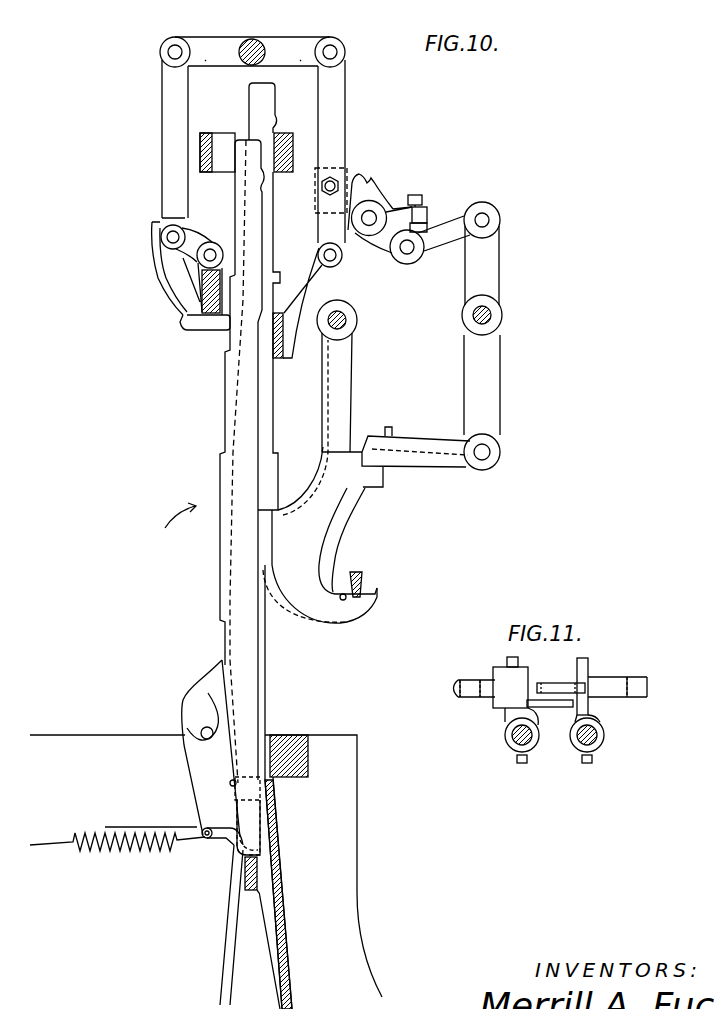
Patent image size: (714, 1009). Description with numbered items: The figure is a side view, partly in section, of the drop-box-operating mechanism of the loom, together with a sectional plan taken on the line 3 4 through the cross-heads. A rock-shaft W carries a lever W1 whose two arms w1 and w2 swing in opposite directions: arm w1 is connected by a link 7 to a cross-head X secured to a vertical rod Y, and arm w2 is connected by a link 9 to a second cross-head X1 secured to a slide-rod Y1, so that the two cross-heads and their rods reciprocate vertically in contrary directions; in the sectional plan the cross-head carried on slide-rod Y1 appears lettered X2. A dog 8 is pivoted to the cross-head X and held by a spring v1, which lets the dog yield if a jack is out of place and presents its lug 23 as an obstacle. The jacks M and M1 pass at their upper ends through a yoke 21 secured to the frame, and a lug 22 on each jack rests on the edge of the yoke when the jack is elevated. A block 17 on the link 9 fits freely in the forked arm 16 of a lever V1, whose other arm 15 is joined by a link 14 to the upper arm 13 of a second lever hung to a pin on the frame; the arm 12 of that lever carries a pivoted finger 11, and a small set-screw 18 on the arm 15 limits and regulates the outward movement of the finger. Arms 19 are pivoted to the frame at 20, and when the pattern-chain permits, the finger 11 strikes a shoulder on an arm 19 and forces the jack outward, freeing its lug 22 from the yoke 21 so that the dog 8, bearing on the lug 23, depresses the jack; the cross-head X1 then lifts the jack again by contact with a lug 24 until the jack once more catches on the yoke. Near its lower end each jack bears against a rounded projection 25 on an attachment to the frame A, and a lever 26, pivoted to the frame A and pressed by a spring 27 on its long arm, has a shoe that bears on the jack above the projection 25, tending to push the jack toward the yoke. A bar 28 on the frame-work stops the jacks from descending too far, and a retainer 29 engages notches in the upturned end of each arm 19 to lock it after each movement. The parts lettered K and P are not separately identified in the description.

In FIG. 10, the lever W1 is at (312, 32).
In FIG. 10, the arm of lever w1 is at (208, 52).
In FIG. 10, the arm of lever w2 is at (300, 52).
In FIG. 10, the rock-shaft W is at (250, 65).
In FIG. 10, the link 7 is at (163, 135).
In FIG. 10, the link 9 is at (345, 135).
In FIG. 10, the block 17 is at (345, 173).
In FIG. 10, the yoke 21 is at (212, 133).
In FIG. 10, the lug 22 is at (275, 125).
In FIG. 10, the jack M1 is at (268, 428).
In FIG. 11, the jack M1 is at (555, 683).
In FIG. 10, the lug 24 is at (280, 276).
In FIG. 10, the cross-head X1 is at (306, 300).
In FIG. 10, the lug 23 is at (226, 353).
In FIG. 10, the jack M is at (232, 428).
In FIG. 11, the jack M is at (548, 707).
In FIG. 10, the bar 28 is at (245, 871).
In FIG. 10, the plate K is at (276, 895).
In FIG. 10, the rounded projection 25 is at (323, 866).
In FIG. 10, the frame A is at (107, 763).
In FIG. 10, the lever 26 is at (210, 752).
In FIG. 10, the plunger P is at (226, 927).
In FIG. 10, the spring 27 is at (117, 849).
In FIG. 10, the pivot 20 is at (346, 318).
In FIG. 10, the finger 11 is at (432, 460).
In FIG. 10, the arm of lever 12 is at (482, 365).
In FIG. 10, the upper arm of lever 13 is at (482, 253).
In FIG. 10, the link 14 is at (447, 245).
In FIG. 10, the arm of lever 15 is at (383, 260).
In FIG. 10, the forked arm 16 is at (364, 190).
In FIG. 10, the lever V1 is at (377, 170).
In FIG. 10, the set-screw 18 is at (422, 199).
In FIG. 10, the section-line point 3 is at (162, 205).
In FIG. 10, the section-line point 4 is at (505, 203).
In FIG. 10, the cross-head X is at (183, 229).
In FIG. 11, the cross-head X is at (491, 682).
In FIG. 10, the dog 8 is at (205, 330).
In FIG. 10, the spring v1 is at (166, 296).
In FIG. 10, the arm 19 is at (320, 481).
In FIG. 10, the retainer 29 is at (362, 578).
In FIG. 11, the arm X2 is at (612, 686).
In FIG. 11, the vertical rod Y is at (505, 735).
In FIG. 11, the slide-rod Y1 is at (604, 735).